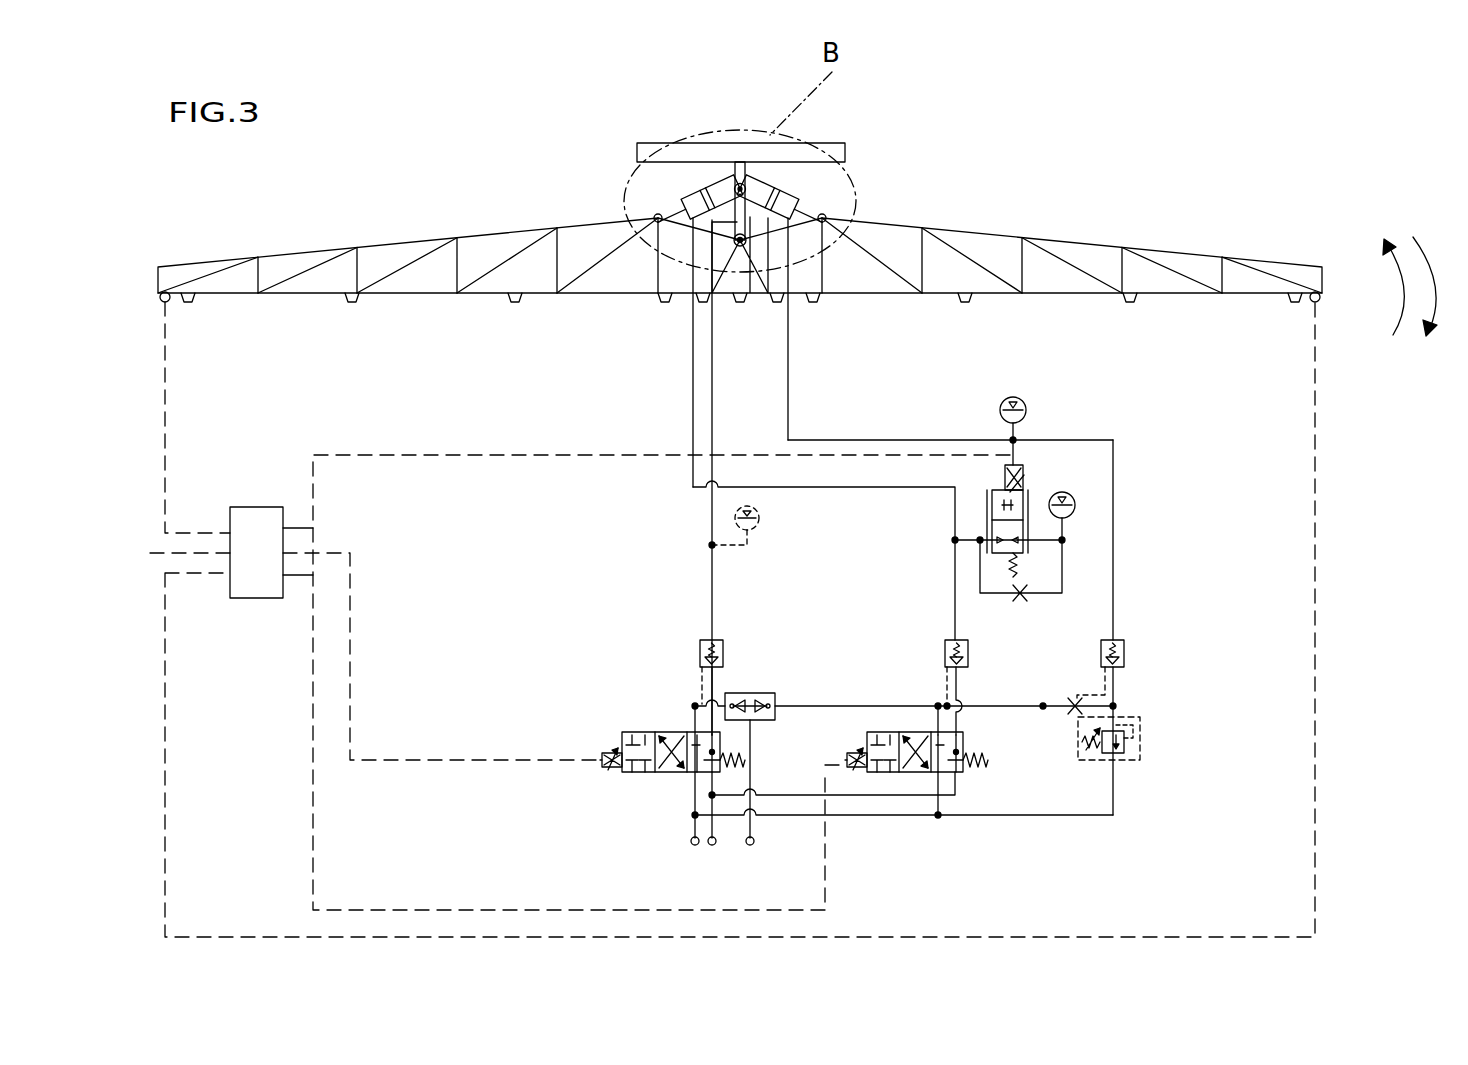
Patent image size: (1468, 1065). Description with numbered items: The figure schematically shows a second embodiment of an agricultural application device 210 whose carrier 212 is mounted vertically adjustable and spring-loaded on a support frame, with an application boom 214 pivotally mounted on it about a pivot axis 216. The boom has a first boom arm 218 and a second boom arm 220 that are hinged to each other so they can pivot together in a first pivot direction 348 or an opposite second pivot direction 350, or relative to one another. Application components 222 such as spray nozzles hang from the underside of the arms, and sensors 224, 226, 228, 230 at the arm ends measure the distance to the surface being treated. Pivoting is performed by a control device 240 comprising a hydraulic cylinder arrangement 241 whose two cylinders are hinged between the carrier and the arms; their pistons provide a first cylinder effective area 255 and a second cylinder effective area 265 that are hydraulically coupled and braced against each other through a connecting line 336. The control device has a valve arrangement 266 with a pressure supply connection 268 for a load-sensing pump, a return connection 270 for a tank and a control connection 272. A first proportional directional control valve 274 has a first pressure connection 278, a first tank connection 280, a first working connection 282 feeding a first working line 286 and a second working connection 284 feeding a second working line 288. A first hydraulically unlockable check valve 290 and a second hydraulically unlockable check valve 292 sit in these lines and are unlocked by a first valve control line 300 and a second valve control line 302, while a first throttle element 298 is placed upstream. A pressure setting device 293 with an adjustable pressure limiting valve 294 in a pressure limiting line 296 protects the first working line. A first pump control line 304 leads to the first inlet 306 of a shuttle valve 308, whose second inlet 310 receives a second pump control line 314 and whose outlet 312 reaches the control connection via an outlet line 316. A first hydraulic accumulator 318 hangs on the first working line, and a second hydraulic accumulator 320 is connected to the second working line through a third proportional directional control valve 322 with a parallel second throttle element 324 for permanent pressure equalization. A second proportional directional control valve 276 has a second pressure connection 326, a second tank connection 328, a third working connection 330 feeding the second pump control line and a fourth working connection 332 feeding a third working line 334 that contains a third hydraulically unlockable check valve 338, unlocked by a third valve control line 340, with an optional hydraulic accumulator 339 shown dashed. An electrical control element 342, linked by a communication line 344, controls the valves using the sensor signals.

The agricultural application device 210 is at (1130, 180).
The carrier 212 is at (637, 150).
The application boom 214 is at (382, 228).
The pivot axis 216 is at (724, 137).
The first boom arm 218 is at (1182, 250).
The second boom arm 220 is at (292, 247).
The application components 222 is at (190, 304).
The sensor 224 is at (693, 318).
The sensor 226 is at (772, 300).
The sensor 228 is at (1318, 303).
The sensor 230 is at (165, 303).
The control device 240 is at (525, 436).
The hydraulic cylinder arrangement 241 is at (786, 162).
The first cylinder effective area 255 is at (785, 197).
The second cylinder effective area 265 is at (697, 193).
The valve arrangement 266 is at (585, 705).
The pressure supply connection 268 is at (713, 846).
The return connection 270 is at (692, 845).
The control connection 272 is at (752, 846).
The first proportional directional control valve 274 is at (890, 733).
The second proportional directional control valve 276 is at (620, 740).
The first pressure connection 278 is at (958, 775).
The first tank connection 280 is at (940, 773).
The first working connection 282 is at (935, 733).
The second working connection 284 is at (960, 740).
The first working line 286 is at (1115, 500).
The second working line 288 is at (826, 487).
The first hydraulically unlockable check valve 290 is at (1127, 650).
The second hydraulically unlockable check valve 292 is at (945, 640).
The pressure setting device 293 is at (1160, 718).
The pressure limiting valve 294 is at (1125, 752).
The pressure limiting line 296 is at (1118, 808).
The first throttle element 298 is at (1073, 714).
The first valve control line 300 is at (1077, 697).
The second valve control line 302 is at (950, 700).
The first pump control line 304 is at (860, 706).
The first inlet 306 is at (775, 700).
The shuttle valve 308 is at (730, 692).
The second inlet 310 is at (740, 660).
The outlet 312 is at (752, 722).
The second pump control line 314 is at (690, 722).
The outlet line 316 is at (752, 757).
The first hydraulic accumulator 318 is at (1025, 408).
The second hydraulic accumulator 320 is at (1073, 510).
The third proportional directional control valve 322 is at (987, 518).
The second throttle element 324 is at (1020, 598).
The second pressure connection 326 is at (690, 782).
The second tank connection 328 is at (690, 773).
The third working connection 330 is at (690, 733).
The fourth working connection 332 is at (700, 695).
The third working line 334 is at (700, 488).
The connecting line 336 is at (745, 294).
The third hydraulically unlockable check valve 338 is at (703, 640).
The optional hydraulic accumulator 339 is at (757, 527).
The third valve control line 340 is at (697, 700).
The electrical control element 342 is at (258, 522).
The communication line 344 is at (160, 553).
The first pivot direction 348 is at (1385, 252).
The second pivot direction 350 is at (1428, 252).